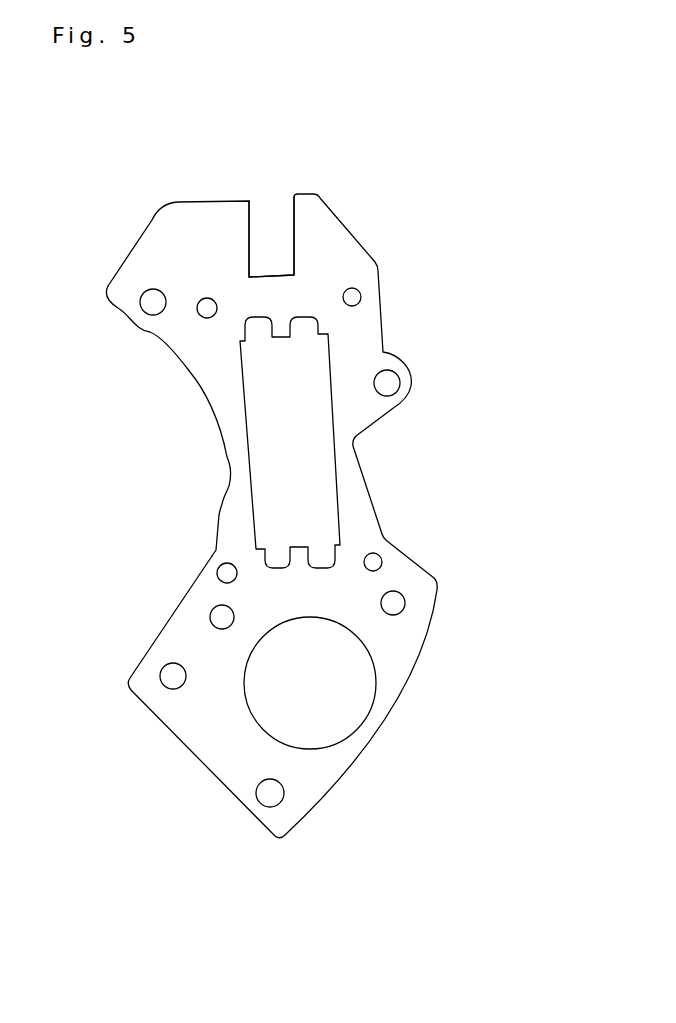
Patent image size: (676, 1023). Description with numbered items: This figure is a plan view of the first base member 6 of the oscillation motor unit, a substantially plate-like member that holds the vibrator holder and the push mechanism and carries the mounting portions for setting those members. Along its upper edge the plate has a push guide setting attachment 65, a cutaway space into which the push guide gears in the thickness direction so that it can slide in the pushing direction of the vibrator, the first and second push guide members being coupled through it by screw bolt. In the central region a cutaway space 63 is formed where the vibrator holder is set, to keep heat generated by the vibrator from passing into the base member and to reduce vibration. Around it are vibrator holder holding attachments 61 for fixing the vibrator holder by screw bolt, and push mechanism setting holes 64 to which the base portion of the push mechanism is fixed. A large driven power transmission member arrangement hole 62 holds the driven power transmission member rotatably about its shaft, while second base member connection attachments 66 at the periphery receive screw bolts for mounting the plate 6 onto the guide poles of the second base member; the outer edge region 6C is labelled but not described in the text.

The first base member 6 is at (66, 105).
The curved side edge portion of the plate 6C is at (227, 463).
The vibrator holder holding attachments 61 is at (361, 297).
The driven power transmission member arrangement hole 62 is at (353, 706).
The cutaway space 63 is at (340, 485).
The push mechanism setting holes 64 is at (211, 620).
The push guide setting attachment 65 is at (270, 226).
The second base member connection attachments 66 is at (146, 306).